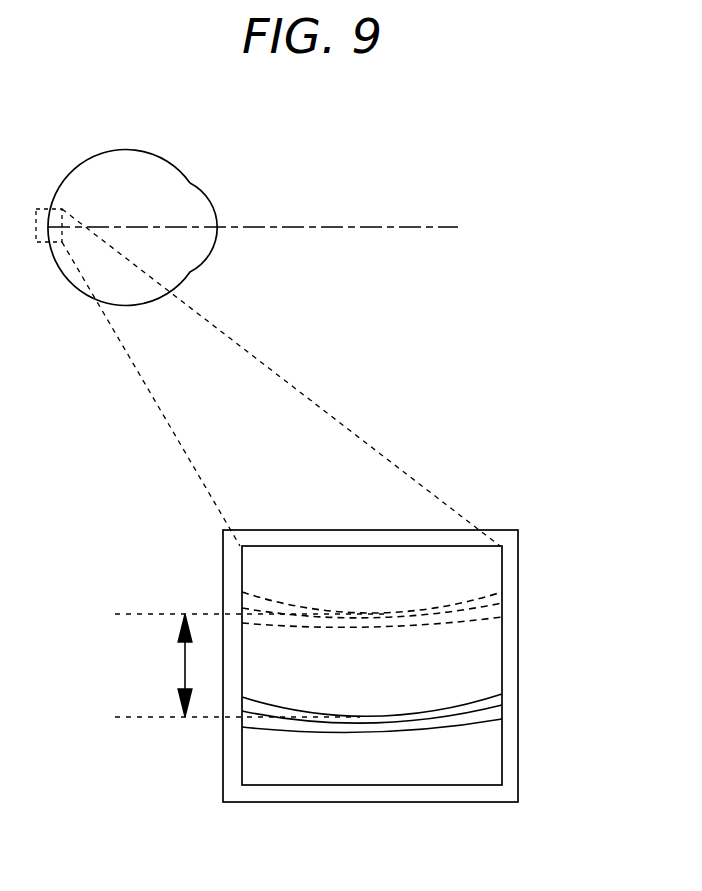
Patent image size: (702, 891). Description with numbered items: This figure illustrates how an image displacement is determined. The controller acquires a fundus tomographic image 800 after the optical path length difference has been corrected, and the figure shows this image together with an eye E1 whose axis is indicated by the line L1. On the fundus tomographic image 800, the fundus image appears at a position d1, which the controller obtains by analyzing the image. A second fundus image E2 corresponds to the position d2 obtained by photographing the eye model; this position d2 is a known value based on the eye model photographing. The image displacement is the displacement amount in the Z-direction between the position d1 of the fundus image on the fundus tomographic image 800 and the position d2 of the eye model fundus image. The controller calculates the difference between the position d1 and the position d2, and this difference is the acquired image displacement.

The eye / image of the eye on the display E1 is at (252, 202).
The optical axis line L1 is at (327, 227).
The shifted image of the eye (virtual image) E2 is at (400, 644).
The fundus tomographic image 800 is at (185, 807).
The position of fundus image obtained by photographing of the eye model d2 is at (235, 614).
The position of fundus image on the fundus tomographic image d1 is at (220, 718).